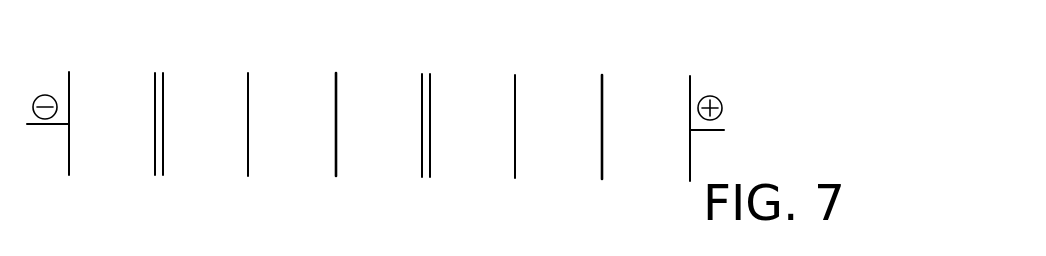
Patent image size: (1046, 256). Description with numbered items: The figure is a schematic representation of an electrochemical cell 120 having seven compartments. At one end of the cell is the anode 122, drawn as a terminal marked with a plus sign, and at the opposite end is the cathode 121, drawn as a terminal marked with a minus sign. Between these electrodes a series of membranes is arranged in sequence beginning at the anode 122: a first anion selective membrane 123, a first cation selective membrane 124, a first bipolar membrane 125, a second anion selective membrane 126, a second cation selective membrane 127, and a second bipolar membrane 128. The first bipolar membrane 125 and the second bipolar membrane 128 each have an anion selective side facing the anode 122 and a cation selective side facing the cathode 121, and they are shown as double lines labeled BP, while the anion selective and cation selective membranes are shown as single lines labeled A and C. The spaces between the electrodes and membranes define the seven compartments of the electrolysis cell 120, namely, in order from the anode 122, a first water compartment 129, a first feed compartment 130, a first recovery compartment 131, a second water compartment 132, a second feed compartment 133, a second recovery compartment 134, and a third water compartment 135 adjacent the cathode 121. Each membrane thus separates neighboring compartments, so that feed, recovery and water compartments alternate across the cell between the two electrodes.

The electrochemical cell 120 is at (714, 34).
The cathode 121 is at (69, 85).
The anode 122 is at (690, 88).
The first anion selective membrane 123 is at (603, 95).
The first cation selective membrane 124 is at (516, 96).
The first bipolar membrane 125 is at (432, 90).
The second anion selective membrane 126 is at (337, 92).
The second cation selective membrane 127 is at (249, 90).
The second bipolar membrane 128 is at (163, 90).
The first water compartment 129 is at (643, 165).
The first feed compartment 130 is at (558, 168).
The first recovery compartment 131 is at (470, 168).
The second water compartment 132 is at (377, 167).
The second feed compartment 133 is at (310, 165).
The second recovery compartment 134 is at (206, 162).
The third water compartment 135 is at (123, 162).